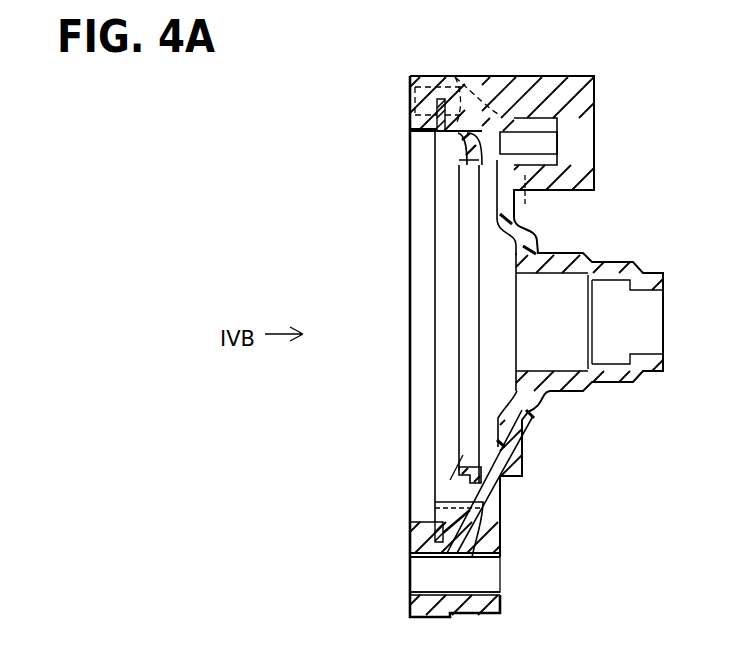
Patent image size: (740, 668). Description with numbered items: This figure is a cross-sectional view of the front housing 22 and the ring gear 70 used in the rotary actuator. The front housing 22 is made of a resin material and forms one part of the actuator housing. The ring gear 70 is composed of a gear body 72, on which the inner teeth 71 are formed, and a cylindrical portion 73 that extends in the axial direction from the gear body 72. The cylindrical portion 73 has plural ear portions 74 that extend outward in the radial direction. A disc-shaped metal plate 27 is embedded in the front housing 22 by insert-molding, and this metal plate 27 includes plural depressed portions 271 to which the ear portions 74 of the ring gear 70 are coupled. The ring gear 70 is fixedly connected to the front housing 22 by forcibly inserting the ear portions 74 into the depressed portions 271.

The front housing 22 is at (490, 77).
The metal plate 27 is at (433, 553).
The ring gear 70 is at (434, 207).
The inner teeth 71 is at (470, 470).
The gear body 72 is at (483, 497).
The cylindrical portion 73 is at (457, 95).
The ear portions 74 is at (490, 553).
The depressed portions 271 is at (435, 510).